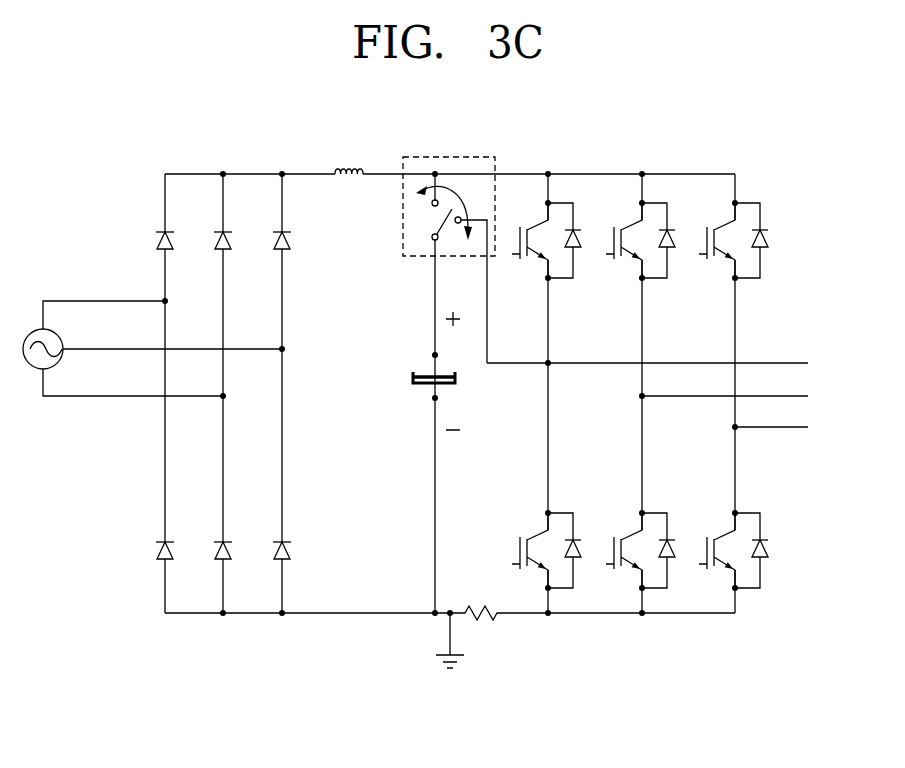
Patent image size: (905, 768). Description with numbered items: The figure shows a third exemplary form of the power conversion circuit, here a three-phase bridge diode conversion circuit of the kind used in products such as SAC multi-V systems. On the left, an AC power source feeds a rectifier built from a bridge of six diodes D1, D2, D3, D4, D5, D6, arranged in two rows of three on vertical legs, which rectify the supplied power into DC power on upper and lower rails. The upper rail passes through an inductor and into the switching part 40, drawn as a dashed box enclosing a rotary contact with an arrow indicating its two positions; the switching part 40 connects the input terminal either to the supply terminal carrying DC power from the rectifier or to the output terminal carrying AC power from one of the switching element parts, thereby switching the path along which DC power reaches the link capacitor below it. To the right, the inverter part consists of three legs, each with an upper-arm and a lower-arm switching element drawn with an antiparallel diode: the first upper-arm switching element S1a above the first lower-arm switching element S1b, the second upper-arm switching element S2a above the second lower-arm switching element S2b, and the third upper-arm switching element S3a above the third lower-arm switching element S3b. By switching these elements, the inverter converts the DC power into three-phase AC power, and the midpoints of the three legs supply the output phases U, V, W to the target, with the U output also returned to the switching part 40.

The switching part 40 is at (451, 155).
The diode D1 is at (155, 241).
The diode D2 is at (213, 241).
The diode D3 is at (272, 241).
The diode D4 is at (155, 552).
The diode D5 is at (213, 552).
The diode D6 is at (272, 552).
The first upper-arm switching element S1a is at (546, 236).
The second upper-arm switching element S2a is at (640, 236).
The third upper-arm switching element S3a is at (733, 236).
The first lower-arm switching element S1b is at (546, 546).
The second lower-arm switching element S2b is at (640, 546).
The third lower-arm switching element S3b is at (733, 546).
The U phase U is at (657, 364).
The V phase V is at (732, 397).
The W phase W is at (781, 428).